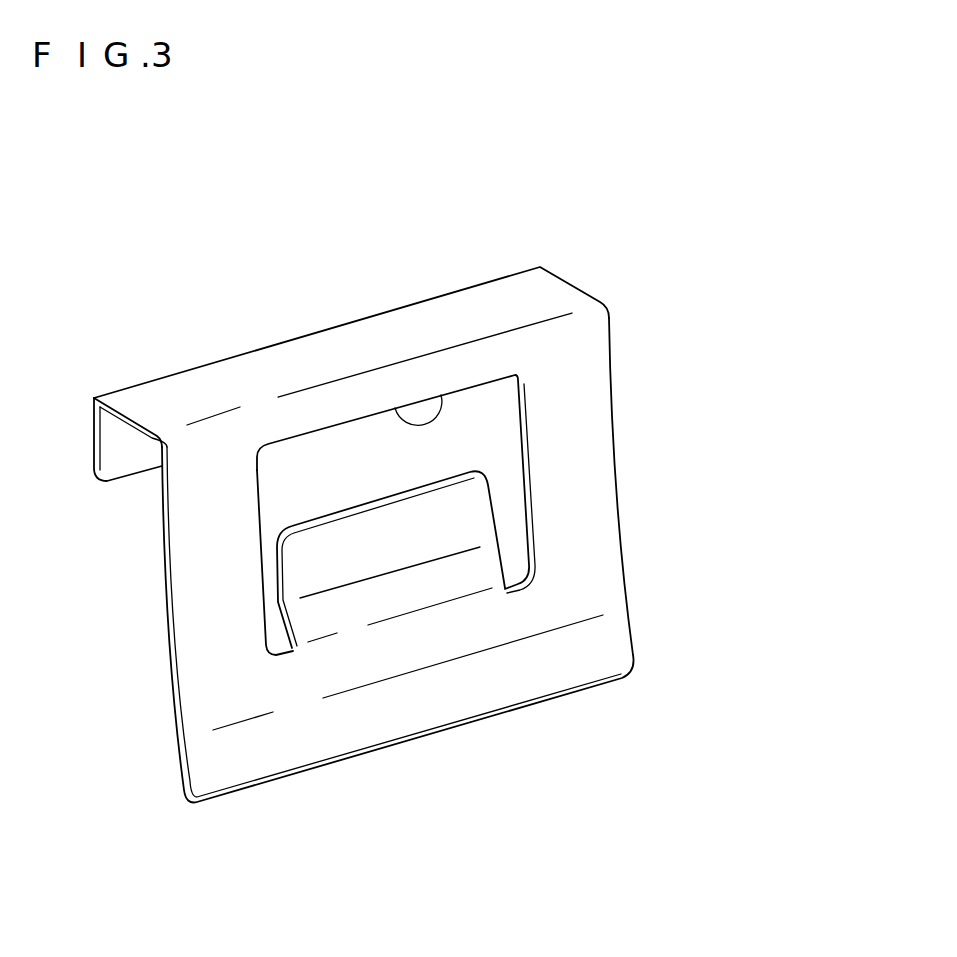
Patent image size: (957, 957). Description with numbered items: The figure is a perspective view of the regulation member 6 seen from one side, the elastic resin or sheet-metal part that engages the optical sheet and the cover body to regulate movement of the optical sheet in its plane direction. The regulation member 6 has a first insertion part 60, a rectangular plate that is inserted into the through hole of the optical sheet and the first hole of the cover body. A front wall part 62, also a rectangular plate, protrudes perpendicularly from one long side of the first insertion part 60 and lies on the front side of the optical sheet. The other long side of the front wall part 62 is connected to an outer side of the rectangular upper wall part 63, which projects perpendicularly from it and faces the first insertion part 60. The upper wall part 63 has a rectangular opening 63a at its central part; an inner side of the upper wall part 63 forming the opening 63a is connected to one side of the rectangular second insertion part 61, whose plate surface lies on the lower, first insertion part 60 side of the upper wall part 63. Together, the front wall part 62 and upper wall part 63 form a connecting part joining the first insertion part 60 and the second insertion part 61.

The regulation member 6 is at (517, 218).
The first insertion part 60 is at (133, 462).
The second insertion part 61 is at (467, 515).
The front wall part 62 is at (558, 290).
The upper wall part 63 is at (597, 403).
The opening 63a is at (441, 395).